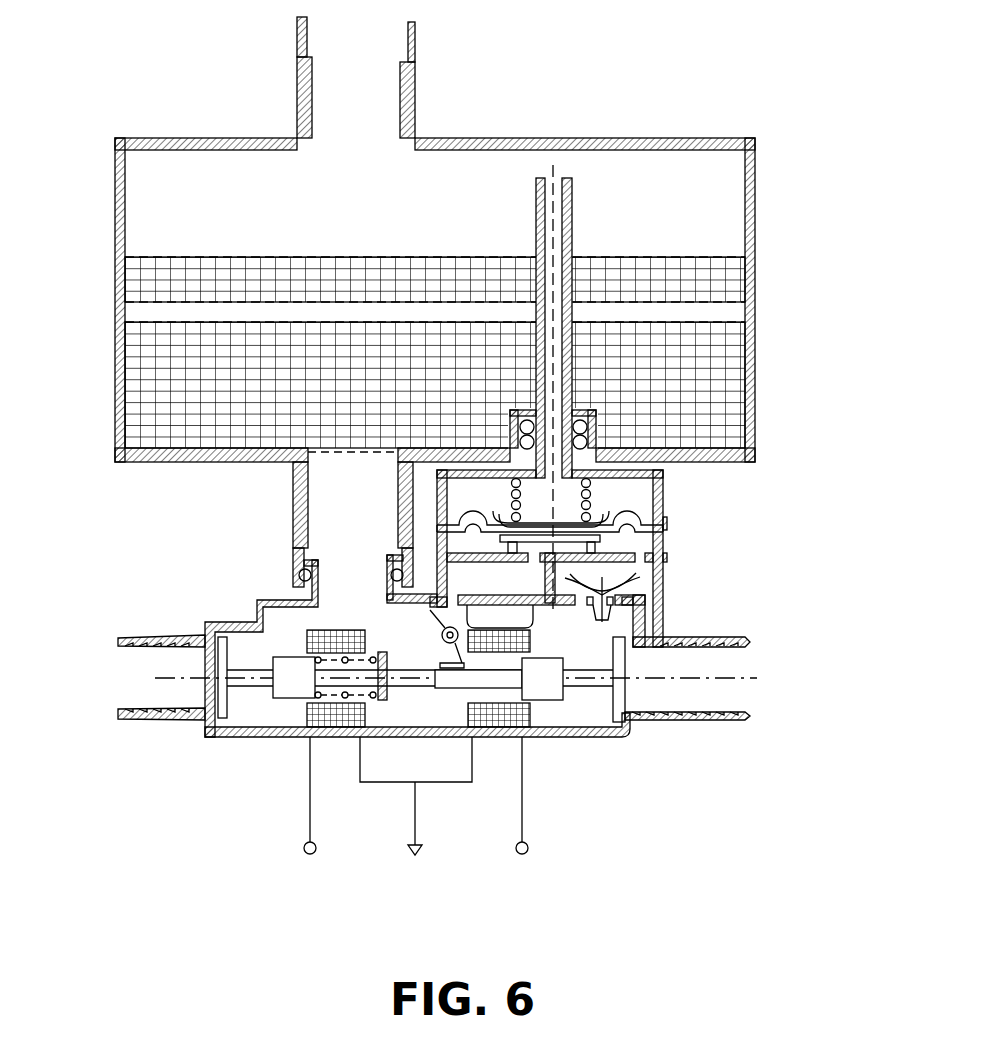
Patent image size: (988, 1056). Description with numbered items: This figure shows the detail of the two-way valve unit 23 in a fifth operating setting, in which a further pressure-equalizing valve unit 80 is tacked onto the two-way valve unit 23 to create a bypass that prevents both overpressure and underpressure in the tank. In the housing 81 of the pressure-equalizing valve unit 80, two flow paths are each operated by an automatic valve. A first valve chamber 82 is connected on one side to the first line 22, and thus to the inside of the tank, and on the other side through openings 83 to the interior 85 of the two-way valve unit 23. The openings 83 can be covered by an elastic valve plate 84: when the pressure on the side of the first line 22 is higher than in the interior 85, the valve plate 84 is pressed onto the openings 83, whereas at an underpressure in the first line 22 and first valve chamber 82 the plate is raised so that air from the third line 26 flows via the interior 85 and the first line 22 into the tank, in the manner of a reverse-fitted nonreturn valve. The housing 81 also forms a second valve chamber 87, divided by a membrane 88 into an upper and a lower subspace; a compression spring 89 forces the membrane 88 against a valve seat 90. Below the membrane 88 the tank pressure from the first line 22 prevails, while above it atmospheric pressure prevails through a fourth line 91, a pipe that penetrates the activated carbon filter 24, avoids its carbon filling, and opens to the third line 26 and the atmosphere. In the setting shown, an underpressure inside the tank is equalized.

The first line 22 is at (733, 695).
The two-way valve unit 23 is at (192, 625).
The activated carbon filter 24 is at (705, 377).
The third line 26 is at (350, 85).
The pressure-equalizing valve unit 80 is at (690, 524).
The housing 81 is at (663, 568).
The first valve chamber 82 is at (604, 583).
The openings 83 is at (624, 600).
The elastic valve plate 84 is at (610, 597).
The interior 85 is at (398, 688).
The second valve chamber 87 is at (627, 514).
The membrane 88 is at (462, 522).
The compression spring 89 is at (592, 497).
The valve seat 90 is at (505, 548).
The fourth line 91 is at (563, 235).